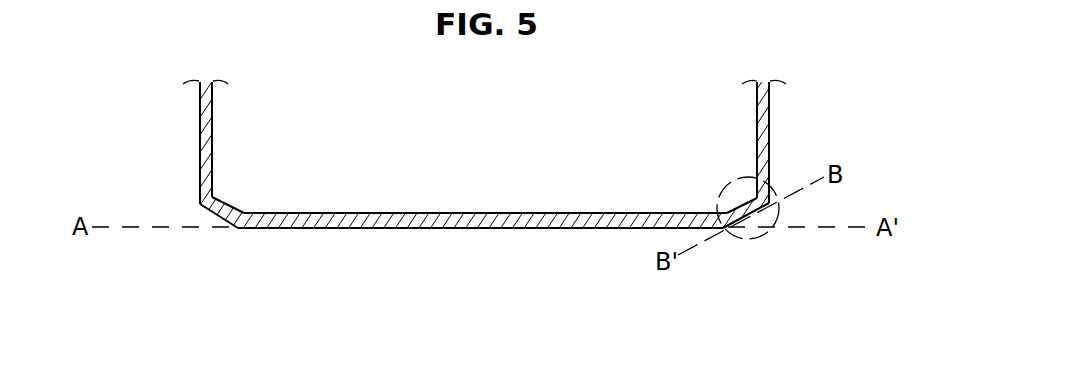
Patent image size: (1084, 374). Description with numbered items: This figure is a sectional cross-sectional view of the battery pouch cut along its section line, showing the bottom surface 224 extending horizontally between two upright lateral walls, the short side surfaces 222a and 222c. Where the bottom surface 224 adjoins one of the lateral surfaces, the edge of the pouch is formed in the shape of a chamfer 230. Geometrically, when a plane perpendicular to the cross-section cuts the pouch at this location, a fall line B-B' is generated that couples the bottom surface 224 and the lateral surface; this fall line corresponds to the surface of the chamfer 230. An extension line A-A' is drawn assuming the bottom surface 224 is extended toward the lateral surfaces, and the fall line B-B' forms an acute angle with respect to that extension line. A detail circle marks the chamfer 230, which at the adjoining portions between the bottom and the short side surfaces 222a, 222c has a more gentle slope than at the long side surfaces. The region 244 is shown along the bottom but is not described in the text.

The short side surface 222a is at (207, 145).
The bottom surface 224 is at (262, 228).
The bottom plate 244 is at (475, 228).
The chamfer 230 is at (771, 236).
The short side surface 222c is at (760, 136).